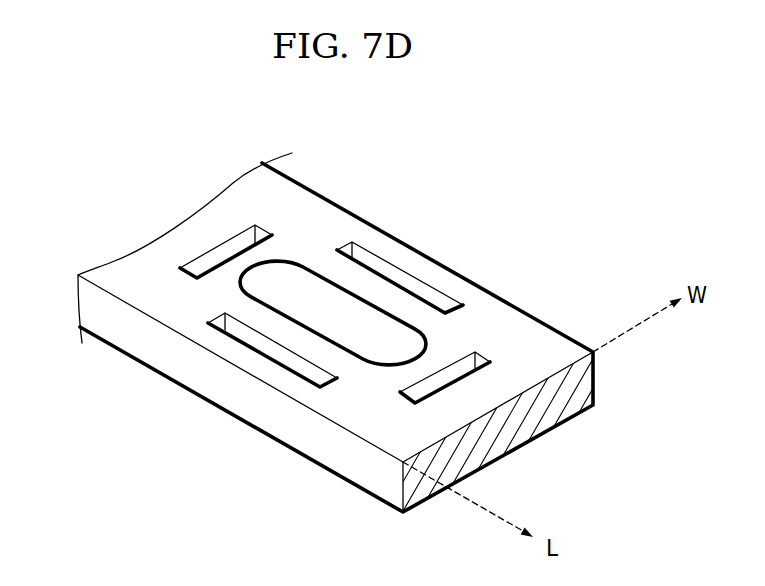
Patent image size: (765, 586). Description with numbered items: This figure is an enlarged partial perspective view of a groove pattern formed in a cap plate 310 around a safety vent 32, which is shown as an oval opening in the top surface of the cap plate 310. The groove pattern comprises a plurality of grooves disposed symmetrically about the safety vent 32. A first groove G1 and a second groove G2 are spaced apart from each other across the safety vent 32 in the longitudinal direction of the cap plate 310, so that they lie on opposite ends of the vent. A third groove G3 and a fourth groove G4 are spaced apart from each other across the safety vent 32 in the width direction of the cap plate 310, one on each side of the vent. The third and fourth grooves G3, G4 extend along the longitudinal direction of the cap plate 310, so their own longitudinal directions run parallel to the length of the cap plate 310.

The cap plate 310 is at (480, 300).
The safety vent 32 is at (330, 290).
The first groove G1 is at (200, 268).
The second groove G2 is at (456, 372).
The third groove G3 is at (393, 273).
The fourth groove G4 is at (270, 348).